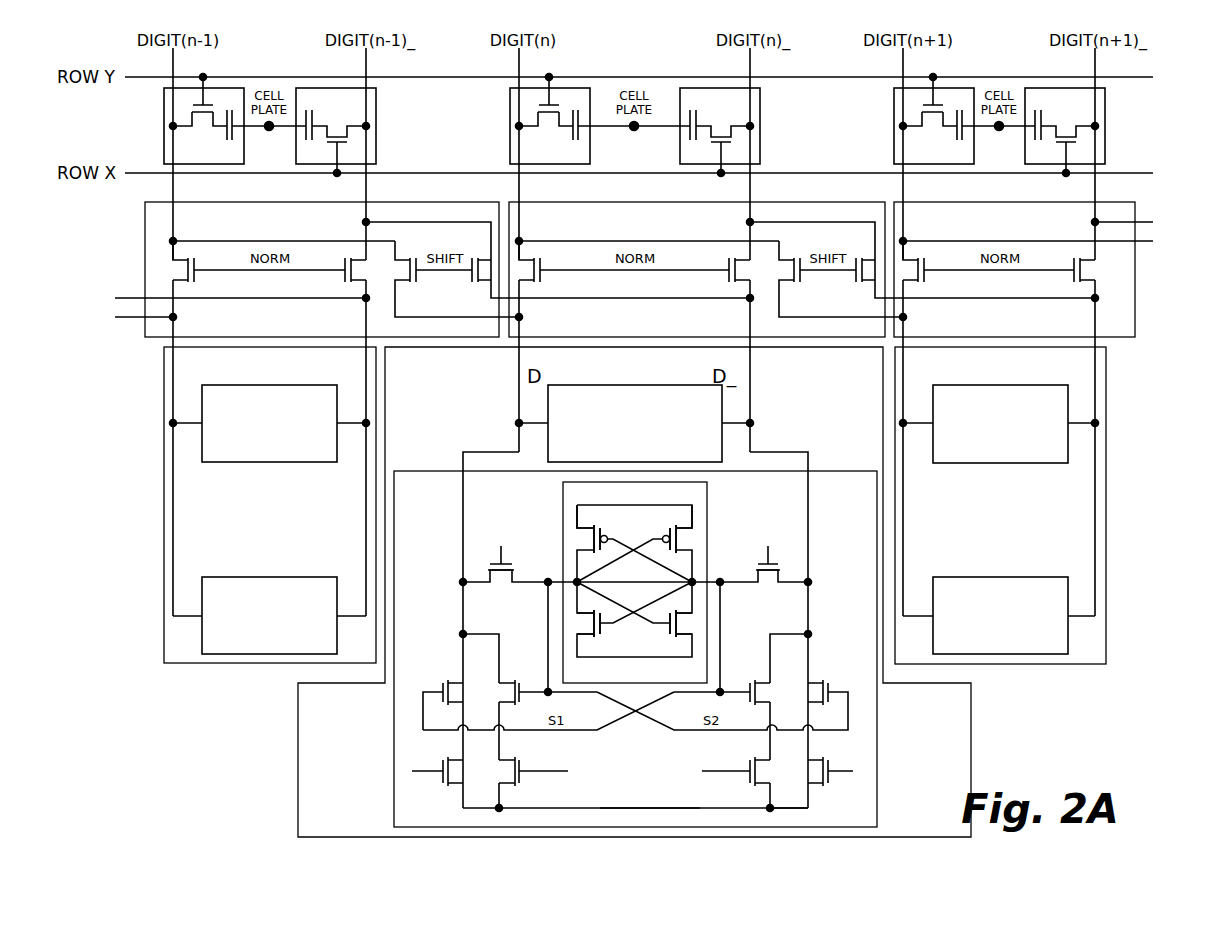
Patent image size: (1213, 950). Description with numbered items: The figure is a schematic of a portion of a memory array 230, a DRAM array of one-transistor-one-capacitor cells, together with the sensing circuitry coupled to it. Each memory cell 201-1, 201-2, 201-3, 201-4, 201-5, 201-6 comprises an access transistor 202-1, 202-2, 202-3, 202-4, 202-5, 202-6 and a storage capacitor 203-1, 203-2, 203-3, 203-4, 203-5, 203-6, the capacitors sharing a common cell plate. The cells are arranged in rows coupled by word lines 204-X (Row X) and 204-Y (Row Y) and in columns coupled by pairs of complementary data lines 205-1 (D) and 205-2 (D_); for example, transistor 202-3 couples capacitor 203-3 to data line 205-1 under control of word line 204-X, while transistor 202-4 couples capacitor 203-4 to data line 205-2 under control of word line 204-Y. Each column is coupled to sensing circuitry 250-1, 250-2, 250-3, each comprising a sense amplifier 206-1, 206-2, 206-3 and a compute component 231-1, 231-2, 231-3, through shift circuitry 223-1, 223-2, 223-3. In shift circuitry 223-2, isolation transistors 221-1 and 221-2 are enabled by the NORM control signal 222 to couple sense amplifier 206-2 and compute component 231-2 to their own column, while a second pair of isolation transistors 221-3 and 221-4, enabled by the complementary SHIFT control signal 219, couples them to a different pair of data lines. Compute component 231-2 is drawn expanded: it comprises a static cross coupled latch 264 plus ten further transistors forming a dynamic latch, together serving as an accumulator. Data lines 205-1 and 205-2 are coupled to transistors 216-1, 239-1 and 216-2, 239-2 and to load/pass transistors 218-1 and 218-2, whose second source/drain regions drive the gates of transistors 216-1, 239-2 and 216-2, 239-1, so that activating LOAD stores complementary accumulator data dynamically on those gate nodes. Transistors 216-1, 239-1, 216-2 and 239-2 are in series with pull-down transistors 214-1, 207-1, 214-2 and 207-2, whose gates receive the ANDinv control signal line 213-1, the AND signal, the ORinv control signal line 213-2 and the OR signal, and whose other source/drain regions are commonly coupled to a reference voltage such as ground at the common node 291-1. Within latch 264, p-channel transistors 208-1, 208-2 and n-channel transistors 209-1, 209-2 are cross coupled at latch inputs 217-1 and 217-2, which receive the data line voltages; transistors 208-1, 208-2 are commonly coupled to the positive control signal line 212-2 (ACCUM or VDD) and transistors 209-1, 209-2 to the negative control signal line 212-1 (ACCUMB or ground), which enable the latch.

The memory cell 201-1 is at (164, 136).
The memory cell 201-2 is at (376, 114).
The memory cell 201-3 is at (510, 136).
The memory cell 201-4 is at (760, 114).
The memory cell 201-5 is at (894, 136).
The memory cell 201-6 is at (1105, 114).
The transistor 202-1 is at (192, 120).
The transistor 202-2 is at (347, 132).
The transistor 202-3 is at (538, 120).
The transistor 202-4 is at (731, 132).
The access transistor 202-5 is at (922, 120).
The access transistor 202-6 is at (1076, 132).
The capacitor 203-1 is at (224, 130).
The capacitor 203-2 is at (312, 124).
The capacitor 203-3 is at (570, 130).
The capacitor 203-4 is at (696, 124).
The capacitor 203-5 is at (954, 130).
The capacitor 203-6 is at (1041, 124).
The word line 204-X is at (1125, 173).
The word line 204-Y is at (1125, 77).
The data line 205-1 is at (519, 392).
The data line 205-2 is at (750, 392).
The sense amplifier 206-1 is at (268, 389).
The sense amplifier 206-2 is at (633, 390).
The sense amplifier 206-3 is at (998, 389).
The pull-down transistor 207-1 is at (455, 788).
The pull-down transistor 207-2 is at (815, 788).
The load/pass transistor 208-1 is at (578, 539).
The load/pass transistor 208-2 is at (692, 539).
The transistor 209-1 is at (578, 624).
The transistor 209-2 is at (692, 624).
The negative control signal line 212-1 is at (668, 657).
The positive control signal line 212-2 is at (602, 506).
The ANDinv control signal line 213-1 is at (537, 774).
The ORinv control signal line 213-2 is at (734, 774).
The pull-down transistor 214-1 is at (500, 770).
The pull-down transistor 214-2 is at (772, 770).
The transistor 216-1 is at (498, 692).
The transistor 216-2 is at (772, 692).
The latch input 217-1 is at (598, 581).
The latch input 217-2 is at (683, 585).
The load/pass transistor 218-1 is at (490, 574).
The load/pass transistor 218-2 is at (778, 574).
The control signal 219 is at (836, 275).
The isolation transistor 221-1 is at (528, 260).
The isolation transistor 221-2 is at (740, 260).
The isolation transistor 221-3 is at (790, 262).
The isolation transistor 221-4 is at (868, 245).
The control signal 222 is at (630, 272).
The shift circuitry 223-1 is at (257, 200).
The shift circuitry 223-2 is at (602, 200).
The shift circuitry 223-3 is at (982, 200).
The memory array 230 is at (125, 187).
The compute component 231-1 is at (268, 581).
The compute component 231-2 is at (394, 722).
The compute component 231-3 is at (998, 581).
The transistor 239-1 is at (452, 713).
The transistor 239-2 is at (818, 713).
The sensing circuitry 250-1 is at (234, 665).
The sensing circuitry 250-2 is at (298, 750).
The sensing circuitry 250-3 is at (1037, 667).
The static latch 264 is at (635, 582).
The node 291-1 is at (629, 806).